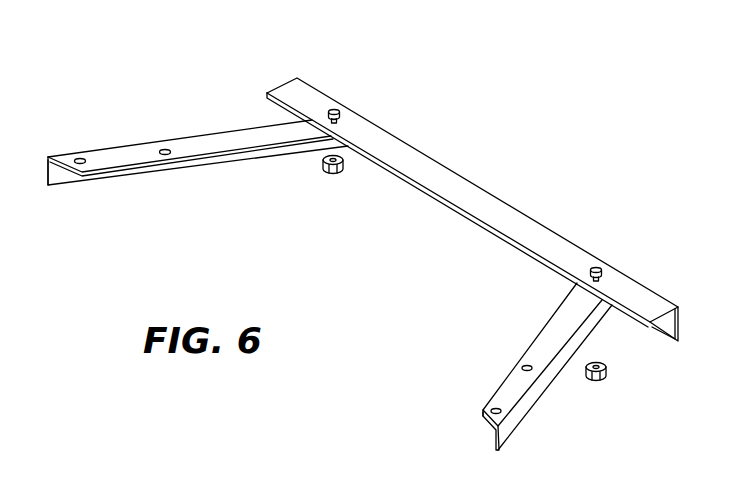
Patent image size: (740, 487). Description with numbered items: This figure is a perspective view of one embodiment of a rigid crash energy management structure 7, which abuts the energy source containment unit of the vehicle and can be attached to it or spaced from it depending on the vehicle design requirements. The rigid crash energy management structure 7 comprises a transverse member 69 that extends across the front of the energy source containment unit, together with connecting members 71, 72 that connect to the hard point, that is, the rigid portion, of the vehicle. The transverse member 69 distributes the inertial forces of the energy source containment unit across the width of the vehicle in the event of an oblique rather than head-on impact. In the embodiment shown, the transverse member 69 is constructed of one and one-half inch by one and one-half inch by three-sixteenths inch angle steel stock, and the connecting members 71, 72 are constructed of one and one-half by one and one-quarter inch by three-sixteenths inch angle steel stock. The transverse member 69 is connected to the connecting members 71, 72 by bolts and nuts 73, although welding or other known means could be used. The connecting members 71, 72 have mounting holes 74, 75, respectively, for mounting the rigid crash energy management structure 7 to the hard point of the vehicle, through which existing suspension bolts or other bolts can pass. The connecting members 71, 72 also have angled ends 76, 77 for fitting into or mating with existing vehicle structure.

The rigid crash energy management structure 7 is at (373, 75).
The transverse member 69 is at (473, 185).
The connecting member 71 is at (178, 168).
The connecting member 72 is at (505, 380).
The bolts and nuts 73 is at (337, 173).
The mounting holes 74 is at (160, 152).
The mounting holes 75 is at (532, 371).
The angled end 76 is at (48, 185).
The angled end 77 is at (484, 420).